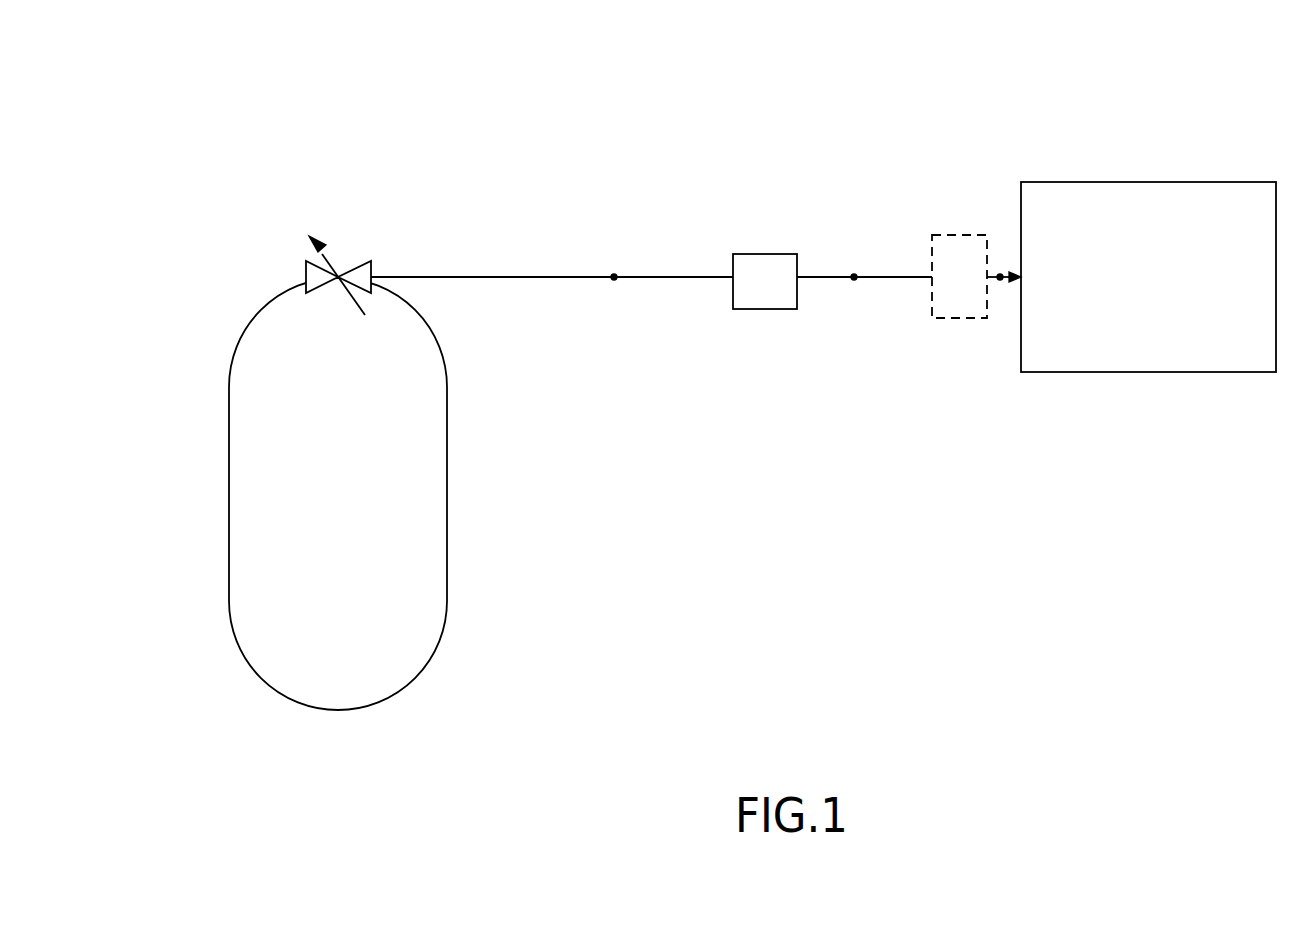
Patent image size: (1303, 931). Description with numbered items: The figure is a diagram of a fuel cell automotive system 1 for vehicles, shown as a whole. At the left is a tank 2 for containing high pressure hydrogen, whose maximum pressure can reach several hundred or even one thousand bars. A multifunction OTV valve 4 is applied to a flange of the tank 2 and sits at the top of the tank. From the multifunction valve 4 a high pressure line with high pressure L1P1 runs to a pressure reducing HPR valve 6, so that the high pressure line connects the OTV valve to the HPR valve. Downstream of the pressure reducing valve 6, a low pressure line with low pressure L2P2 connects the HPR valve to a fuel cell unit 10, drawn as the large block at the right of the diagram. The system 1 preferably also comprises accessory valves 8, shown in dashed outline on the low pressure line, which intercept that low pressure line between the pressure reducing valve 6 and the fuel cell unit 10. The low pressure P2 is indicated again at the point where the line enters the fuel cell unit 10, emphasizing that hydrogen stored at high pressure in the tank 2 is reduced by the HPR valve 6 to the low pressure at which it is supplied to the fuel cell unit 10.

The fuel cell automotive system 1 is at (162, 117).
The tank 2 is at (447, 524).
The multifunction valve 4 is at (340, 264).
The pressure reducing valve 6 is at (765, 255).
The accessory valves 8 is at (948, 236).
The fuel cell unit 10 is at (1134, 373).
The high pressure line with high pressure L1P1 is at (614, 275).
The low pressure line with low pressure L2P2 is at (854, 275).
The low pressure P2 is at (1000, 282).